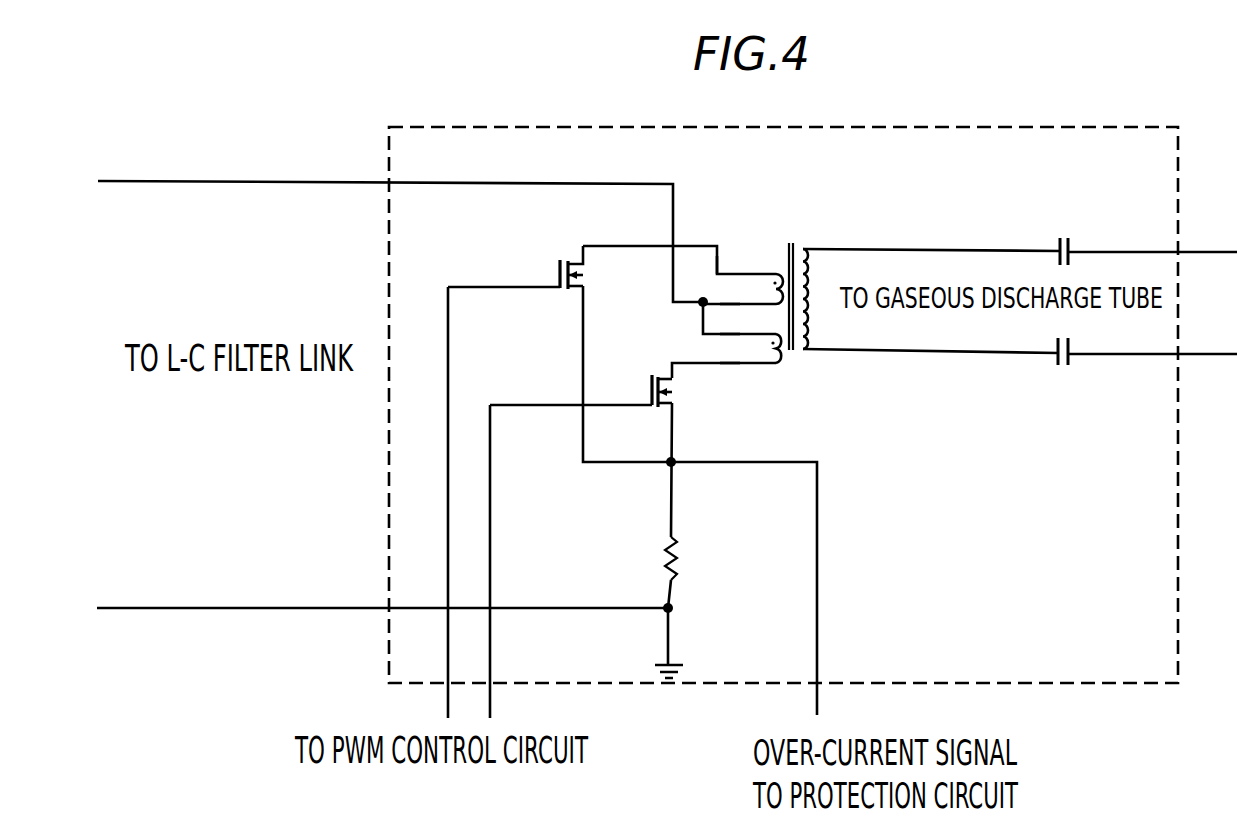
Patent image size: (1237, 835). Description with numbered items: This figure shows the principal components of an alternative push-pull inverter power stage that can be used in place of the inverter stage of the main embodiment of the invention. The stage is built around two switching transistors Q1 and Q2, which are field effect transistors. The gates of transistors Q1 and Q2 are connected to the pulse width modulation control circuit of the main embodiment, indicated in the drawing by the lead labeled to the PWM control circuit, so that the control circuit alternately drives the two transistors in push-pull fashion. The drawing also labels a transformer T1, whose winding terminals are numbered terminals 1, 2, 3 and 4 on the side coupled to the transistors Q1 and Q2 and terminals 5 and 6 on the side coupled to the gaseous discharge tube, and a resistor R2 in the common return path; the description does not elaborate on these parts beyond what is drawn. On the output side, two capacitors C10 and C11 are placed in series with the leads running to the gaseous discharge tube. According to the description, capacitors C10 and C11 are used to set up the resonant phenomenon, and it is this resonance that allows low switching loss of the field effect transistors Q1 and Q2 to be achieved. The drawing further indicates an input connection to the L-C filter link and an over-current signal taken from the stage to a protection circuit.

The transistor Q1 is at (584, 267).
The transistor Q2 is at (673, 388).
The current sensing resistor R2 is at (675, 553).
The output transformer T1 is at (783, 263).
The transformer T1 primary terminal 1 is at (728, 257).
The transformer T1 primary terminal 2 is at (731, 322).
The transformer T1 primary terminal 3 is at (730, 291).
The inverter stage 4 is at (730, 351).
The transformer T1 secondary terminal 5 is at (930, 335).
The pulse width modulation control circuit 6 is at (931, 235).
The capacitor C10 is at (1063, 238).
The capacitor C11 is at (1062, 344).